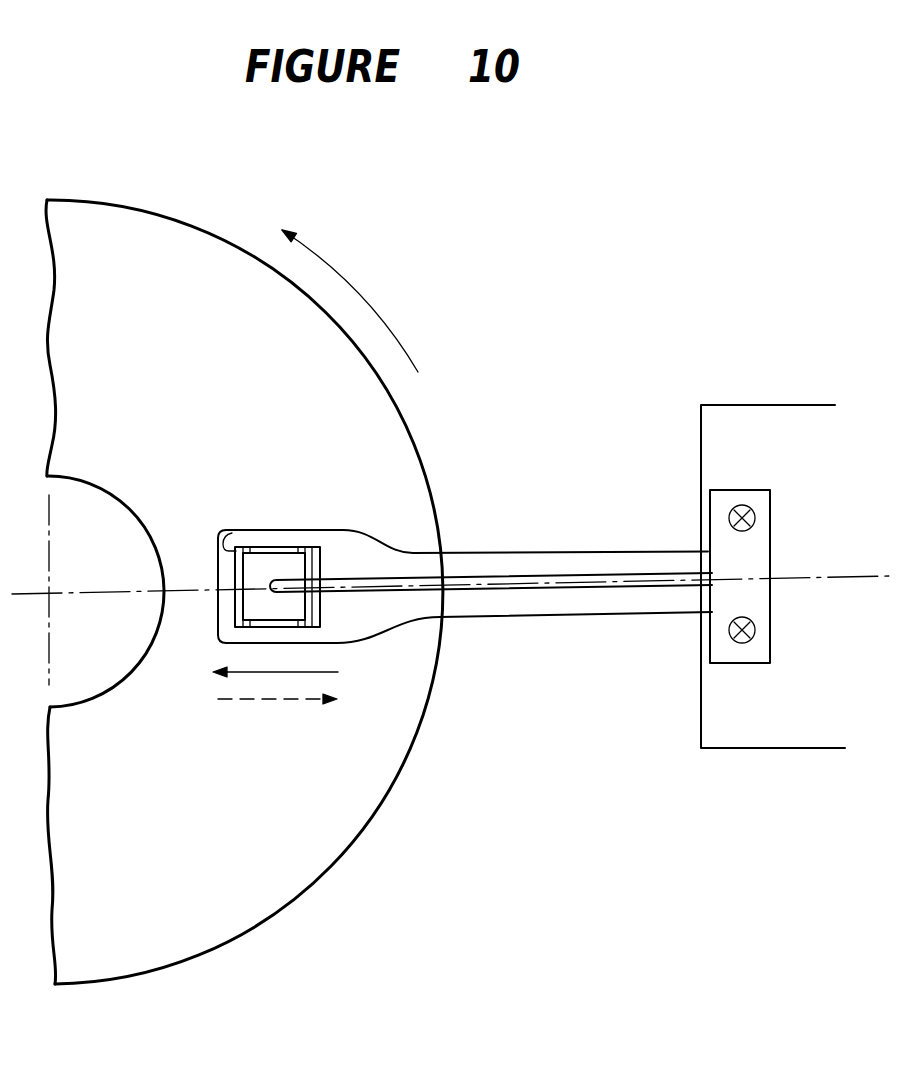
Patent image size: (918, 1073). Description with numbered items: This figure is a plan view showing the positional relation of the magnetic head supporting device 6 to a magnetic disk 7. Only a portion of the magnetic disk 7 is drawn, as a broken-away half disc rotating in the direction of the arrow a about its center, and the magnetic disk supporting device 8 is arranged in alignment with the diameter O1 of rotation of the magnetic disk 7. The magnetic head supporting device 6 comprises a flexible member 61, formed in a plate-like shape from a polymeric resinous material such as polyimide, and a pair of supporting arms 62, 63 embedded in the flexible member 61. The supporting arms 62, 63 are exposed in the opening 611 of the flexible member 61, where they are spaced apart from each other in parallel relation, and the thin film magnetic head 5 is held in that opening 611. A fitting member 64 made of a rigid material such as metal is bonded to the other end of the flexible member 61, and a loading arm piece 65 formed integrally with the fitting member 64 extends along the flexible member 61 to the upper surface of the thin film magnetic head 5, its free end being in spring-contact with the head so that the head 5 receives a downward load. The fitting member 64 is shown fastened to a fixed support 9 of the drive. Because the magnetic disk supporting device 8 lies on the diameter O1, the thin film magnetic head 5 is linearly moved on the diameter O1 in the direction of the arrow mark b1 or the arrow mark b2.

The thin film magnetic head 5 is at (240, 608).
The magnetic head supporting device 6 is at (491, 567).
The magnetic disk 7 is at (160, 205).
The magnetic disk supporting device 8 is at (613, 624).
The fixed wall 9 is at (770, 403).
The flexible member 61 is at (470, 560).
The supporting arm 62 is at (228, 532).
The supporting arm 63 is at (313, 547).
The fitting member 64 is at (720, 630).
The loading arm piece 65 is at (548, 586).
The opening 611 is at (420, 613).
The rotation direction a is at (372, 308).
The arrow mark b1 is at (312, 668).
The arrow mark b2 is at (270, 700).
The diameter of rotation O1 is at (88, 592).